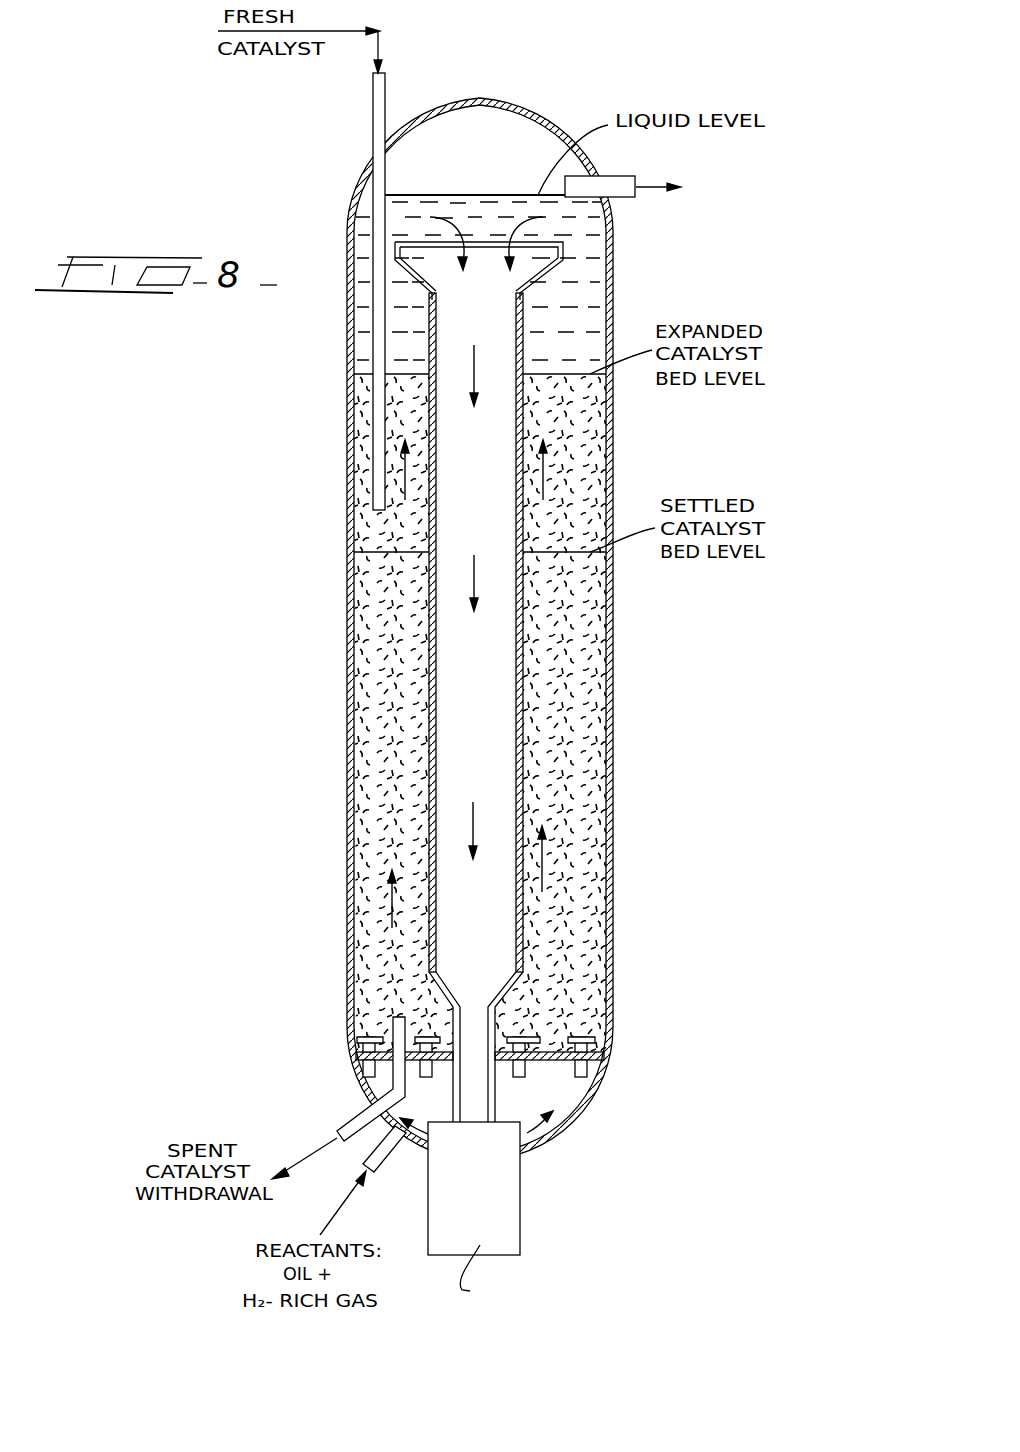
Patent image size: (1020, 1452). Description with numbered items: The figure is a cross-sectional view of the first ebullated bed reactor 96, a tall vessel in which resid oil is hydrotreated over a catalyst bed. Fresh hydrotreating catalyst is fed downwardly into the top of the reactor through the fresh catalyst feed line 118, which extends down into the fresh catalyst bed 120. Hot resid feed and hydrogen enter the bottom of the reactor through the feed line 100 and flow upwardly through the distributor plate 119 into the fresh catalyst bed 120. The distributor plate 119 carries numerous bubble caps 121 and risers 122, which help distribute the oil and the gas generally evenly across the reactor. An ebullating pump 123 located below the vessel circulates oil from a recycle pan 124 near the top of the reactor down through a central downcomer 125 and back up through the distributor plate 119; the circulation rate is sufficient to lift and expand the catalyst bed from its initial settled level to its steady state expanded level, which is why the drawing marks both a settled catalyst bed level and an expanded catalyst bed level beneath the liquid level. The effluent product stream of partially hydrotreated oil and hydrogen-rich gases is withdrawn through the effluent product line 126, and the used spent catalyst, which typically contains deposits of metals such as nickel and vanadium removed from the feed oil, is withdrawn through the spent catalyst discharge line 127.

The first ebullated bed reactor 96 is at (346, 510).
The feed line 100 is at (397, 1158).
The fresh catalyst feed line 118 is at (372, 107).
The distributor plate 119 is at (592, 1055).
The fresh catalyst bed 120 is at (375, 620).
The bubble caps 121 is at (580, 1038).
The risers 122 is at (585, 1066).
The ebullating pump 123 is at (520, 1203).
The recycle pan 124 is at (563, 250).
The downcomer 125 is at (430, 677).
The effluent product line 126 is at (635, 176).
The spent catalyst discharge line 127 is at (345, 1120).